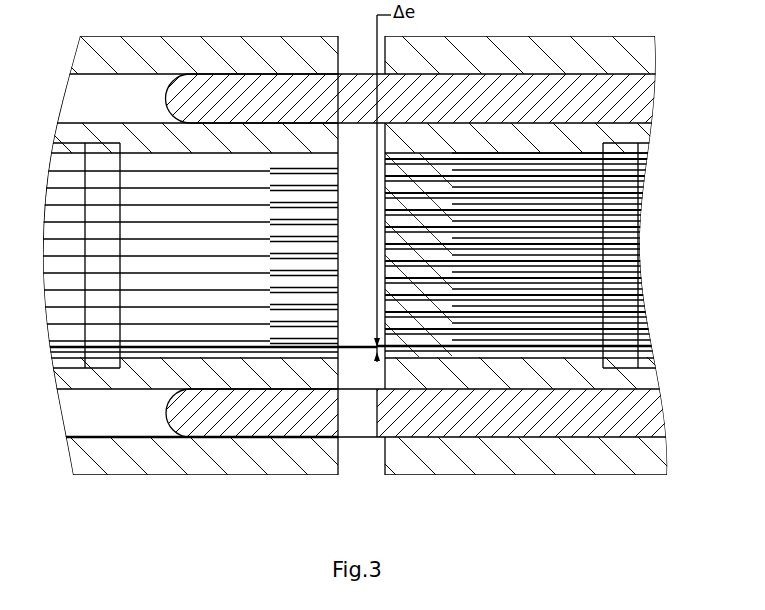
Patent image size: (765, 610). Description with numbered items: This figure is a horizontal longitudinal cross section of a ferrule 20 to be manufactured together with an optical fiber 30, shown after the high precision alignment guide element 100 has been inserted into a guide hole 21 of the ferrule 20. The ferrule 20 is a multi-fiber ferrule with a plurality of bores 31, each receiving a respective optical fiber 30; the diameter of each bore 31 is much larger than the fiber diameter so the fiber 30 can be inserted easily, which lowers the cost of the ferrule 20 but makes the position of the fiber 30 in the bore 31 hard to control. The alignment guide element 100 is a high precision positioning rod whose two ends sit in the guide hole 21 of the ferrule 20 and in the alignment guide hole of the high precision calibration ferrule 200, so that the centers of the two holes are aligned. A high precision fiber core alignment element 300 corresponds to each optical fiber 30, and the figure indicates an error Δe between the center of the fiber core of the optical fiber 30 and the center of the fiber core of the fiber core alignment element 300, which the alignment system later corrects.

The high precision alignment guide element 100 is at (302, 93).
The high precision calibration ferrule 200 is at (533, 470).
The ferrule 20 is at (240, 462).
The guide hole 21 is at (100, 100).
The bore 31 is at (140, 358).
The optical fiber 30 is at (345, 347).
The high precision fiber core alignment element 300 is at (382, 437).